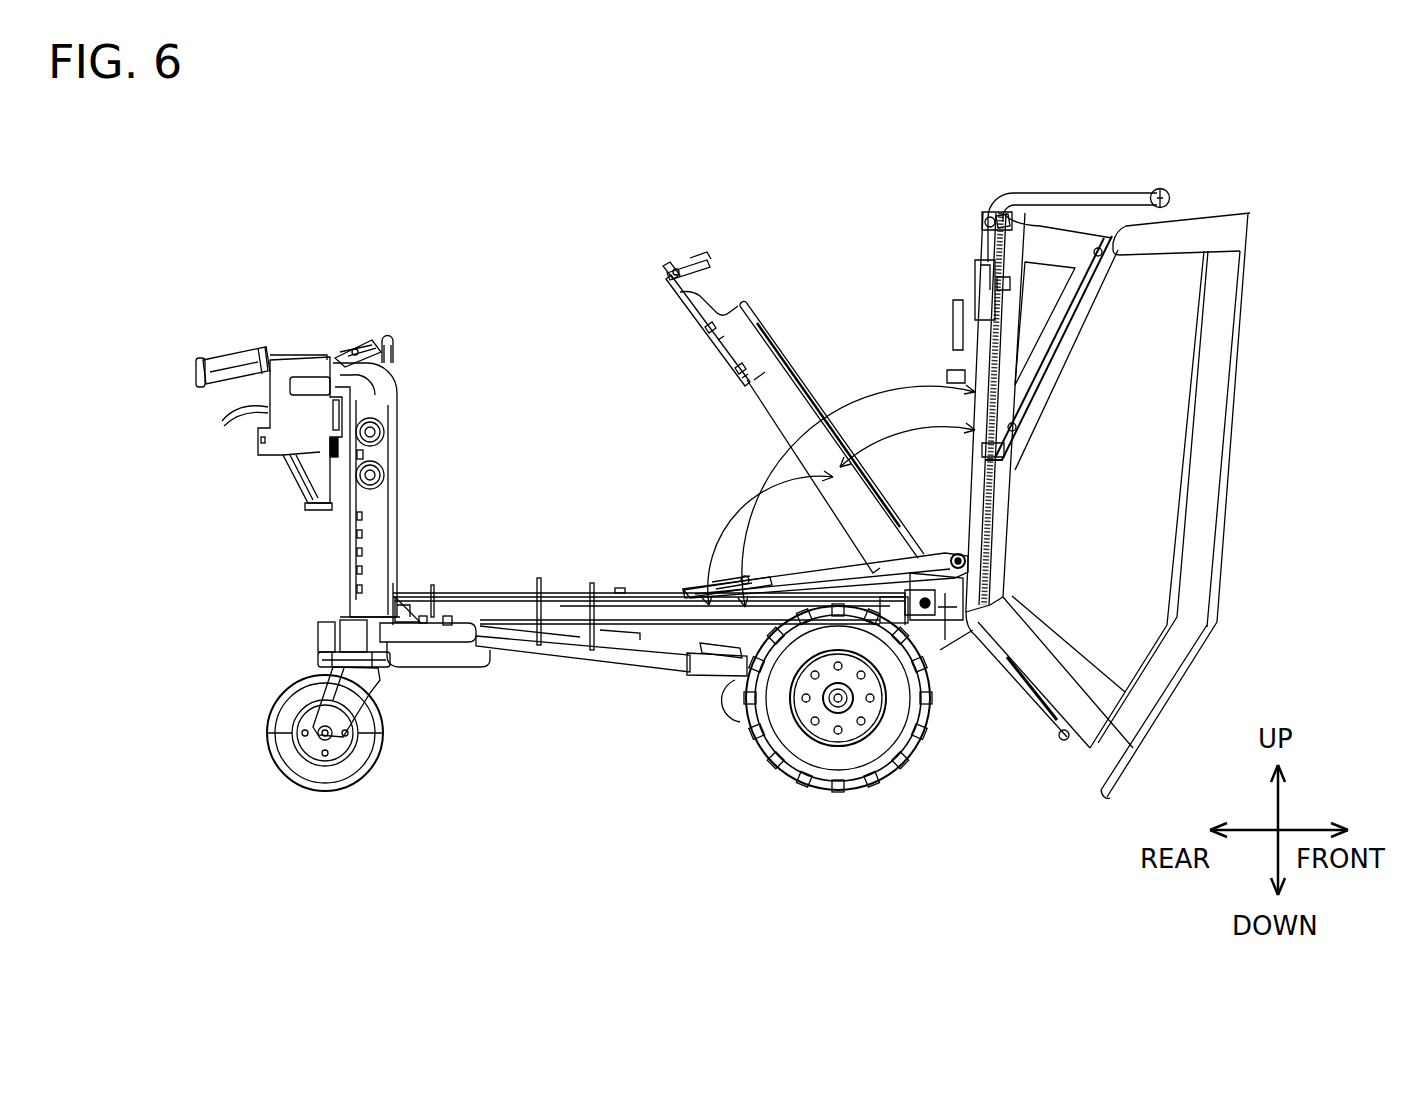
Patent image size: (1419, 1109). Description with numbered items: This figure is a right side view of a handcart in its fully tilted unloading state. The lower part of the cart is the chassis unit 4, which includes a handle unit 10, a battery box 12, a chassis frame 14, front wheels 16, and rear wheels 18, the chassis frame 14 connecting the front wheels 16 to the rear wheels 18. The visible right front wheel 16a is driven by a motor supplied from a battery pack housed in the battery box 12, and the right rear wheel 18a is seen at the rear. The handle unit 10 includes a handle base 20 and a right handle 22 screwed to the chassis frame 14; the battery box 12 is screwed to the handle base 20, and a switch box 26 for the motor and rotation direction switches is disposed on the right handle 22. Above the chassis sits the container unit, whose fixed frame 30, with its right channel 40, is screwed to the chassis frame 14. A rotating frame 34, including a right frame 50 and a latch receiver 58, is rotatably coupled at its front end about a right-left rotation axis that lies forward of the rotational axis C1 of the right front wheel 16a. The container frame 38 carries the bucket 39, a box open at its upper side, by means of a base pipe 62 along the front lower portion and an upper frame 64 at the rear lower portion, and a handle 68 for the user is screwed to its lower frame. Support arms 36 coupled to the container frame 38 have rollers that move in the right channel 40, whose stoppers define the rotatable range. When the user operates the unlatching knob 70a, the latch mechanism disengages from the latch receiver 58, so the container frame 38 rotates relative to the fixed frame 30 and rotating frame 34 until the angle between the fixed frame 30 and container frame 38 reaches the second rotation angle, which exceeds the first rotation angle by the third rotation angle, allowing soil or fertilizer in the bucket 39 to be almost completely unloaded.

The chassis unit 4 is at (253, 573).
The handle unit 10 is at (250, 301).
The battery box 12 is at (207, 459).
The chassis frame 14 is at (489, 770).
The front wheels 16 is at (874, 750).
The right front wheel 16a is at (920, 695).
The rear wheels 18 is at (222, 742).
The right rear wheel 18a is at (290, 770).
The handle base 20 is at (388, 335).
The right handle 22 is at (383, 392).
The switch box 26 is at (285, 446).
The fixed frame 30 is at (403, 608).
The rotating frame 34 is at (783, 407).
The support arms 36 is at (980, 568).
The container frame 38 is at (1050, 722).
The bucket 39 is at (1225, 465).
The right channel 40 is at (620, 603).
The right frame 50 is at (740, 337).
The latch receiver 58 is at (700, 262).
The base pipe 62 is at (1010, 675).
The upper frame 64 is at (1048, 245).
The handle 68 is at (1160, 190).
The unlatching knob 70a is at (995, 215).
The rotational axis of the right front wheel C1 is at (838, 698).